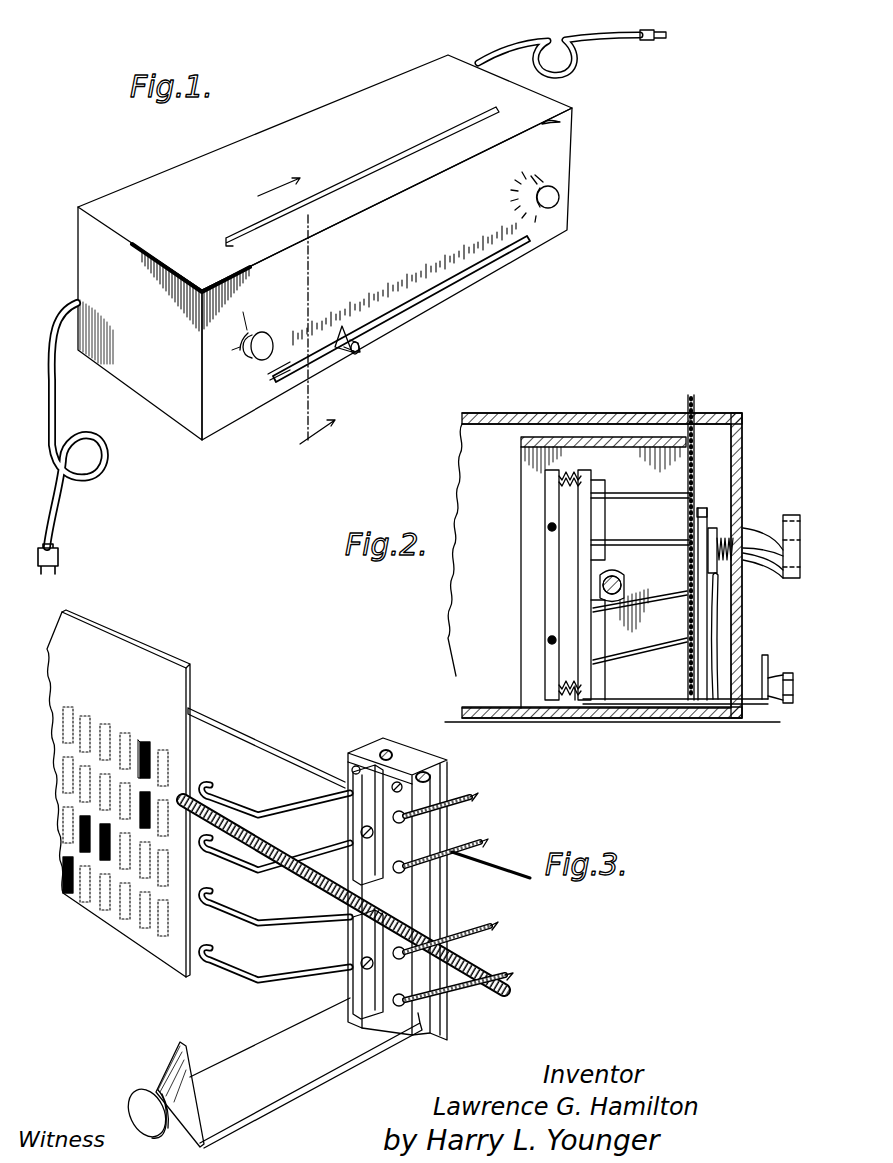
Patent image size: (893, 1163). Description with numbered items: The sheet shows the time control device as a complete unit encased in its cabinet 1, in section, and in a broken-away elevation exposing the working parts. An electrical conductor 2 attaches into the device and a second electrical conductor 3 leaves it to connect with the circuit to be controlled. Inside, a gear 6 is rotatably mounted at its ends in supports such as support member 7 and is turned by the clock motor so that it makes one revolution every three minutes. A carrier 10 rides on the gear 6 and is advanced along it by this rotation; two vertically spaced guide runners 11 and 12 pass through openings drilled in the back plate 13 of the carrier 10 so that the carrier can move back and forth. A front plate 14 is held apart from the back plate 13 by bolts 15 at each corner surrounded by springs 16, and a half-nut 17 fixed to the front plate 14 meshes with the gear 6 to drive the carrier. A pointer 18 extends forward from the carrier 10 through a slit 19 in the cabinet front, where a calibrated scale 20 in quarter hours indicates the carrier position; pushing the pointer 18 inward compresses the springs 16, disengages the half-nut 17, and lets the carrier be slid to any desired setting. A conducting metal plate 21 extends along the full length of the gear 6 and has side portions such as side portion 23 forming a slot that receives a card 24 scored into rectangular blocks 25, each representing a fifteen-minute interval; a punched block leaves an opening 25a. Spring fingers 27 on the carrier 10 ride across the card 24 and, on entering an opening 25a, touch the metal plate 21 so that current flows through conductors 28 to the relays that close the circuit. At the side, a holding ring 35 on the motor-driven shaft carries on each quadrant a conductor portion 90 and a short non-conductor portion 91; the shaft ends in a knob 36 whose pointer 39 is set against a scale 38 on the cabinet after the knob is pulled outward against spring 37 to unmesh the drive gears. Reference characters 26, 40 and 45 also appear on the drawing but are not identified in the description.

In FIG. 1, the cabinet 1 is at (126, 196).
In FIG. 2, the cabinet 1 is at (726, 412).
In FIG. 1, the electrical conductor 2 is at (105, 462).
In FIG. 1, the electrical conductor 3 is at (594, 38).
In FIG. 2, the gear 6 is at (603, 587).
In FIG. 3, the gear 6 is at (506, 986).
In FIG. 2, the support member 7 is at (603, 455).
In FIG. 3, the carrier 10 is at (424, 734).
In FIG. 2, the guide runner 11 is at (548, 527).
In FIG. 3, the guide runner 11 is at (265, 753).
In FIG. 2, the guide runner 12 is at (549, 642).
In FIG. 2, the back plate 13 is at (548, 553).
In FIG. 3, the back plate 13 is at (450, 779).
In FIG. 2, the front plate 14 is at (585, 470).
In FIG. 3, the front plate 14 is at (352, 776).
In FIG. 2, the bolts 15 is at (578, 702).
In FIG. 3, the bolts 15 is at (372, 766).
In FIG. 2, the springs 16 is at (566, 484).
In FIG. 3, the springs 16 is at (390, 752).
In FIG. 2, the half-nut 17 is at (614, 574).
In FIG. 3, the half-nut 17 is at (332, 896).
In FIG. 1, the pointer 18 is at (341, 360).
In FIG. 2, the pointer 18 is at (662, 705).
In FIG. 3, the pointer 18 is at (306, 1084).
In FIG. 1, the slit 19 is at (286, 384).
In FIG. 2, the slit 19 is at (745, 720).
In FIG. 1, the calibrated scale 20 is at (408, 292).
In FIG. 2, the metal plate 21 is at (716, 708).
In FIG. 2, the side portion 23 is at (696, 579).
In FIG. 1, the card member 24 is at (378, 160).
In FIG. 2, the card member 24 is at (691, 398).
In FIG. 3, the card member 24 is at (122, 656).
In FIG. 3, the rectangular blocks 25 is at (165, 770).
In FIG. 3, the opening 25a is at (150, 760).
In FIG. 1, the dial 26 is at (525, 137).
In FIG. 2, the spring fingers 27 is at (640, 497).
In FIG. 3, the spring fingers 27 is at (233, 797).
In FIG. 3, the conductors 28 is at (482, 845).
In FIG. 2, the holding ring 35 is at (728, 537).
In FIG. 1, the knob 36 is at (555, 203).
In FIG. 2, the knob 36 is at (790, 578).
In FIG. 2, the spring 37 is at (745, 528).
In FIG. 1, the scale 38 is at (517, 190).
In FIG. 1, the pointer 39 is at (542, 177).
In FIG. 2, the pointer 39 is at (748, 545).
In FIG. 1, the plug 40 is at (60, 558).
In FIG. 1, the selector knob 45 is at (259, 360).
In FIG. 2, the conductor portion 90 is at (703, 508).
In FIG. 2, the non-conductor portion 91 is at (713, 530).